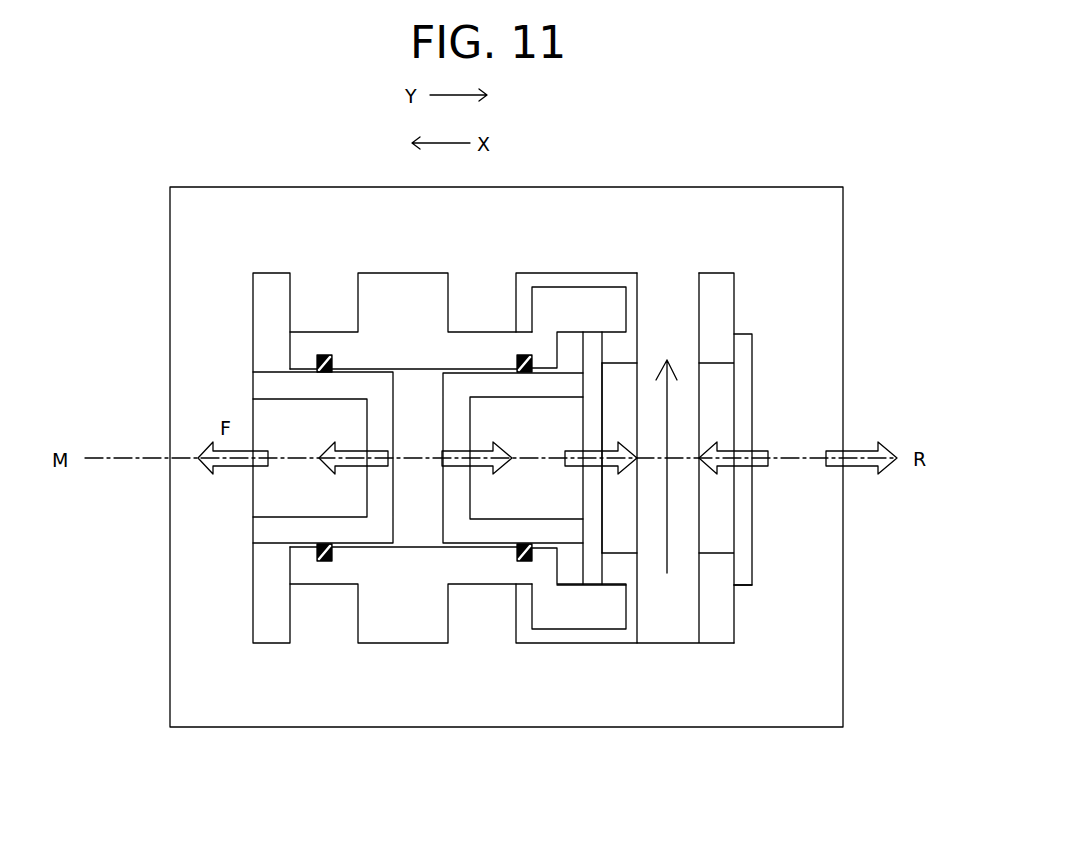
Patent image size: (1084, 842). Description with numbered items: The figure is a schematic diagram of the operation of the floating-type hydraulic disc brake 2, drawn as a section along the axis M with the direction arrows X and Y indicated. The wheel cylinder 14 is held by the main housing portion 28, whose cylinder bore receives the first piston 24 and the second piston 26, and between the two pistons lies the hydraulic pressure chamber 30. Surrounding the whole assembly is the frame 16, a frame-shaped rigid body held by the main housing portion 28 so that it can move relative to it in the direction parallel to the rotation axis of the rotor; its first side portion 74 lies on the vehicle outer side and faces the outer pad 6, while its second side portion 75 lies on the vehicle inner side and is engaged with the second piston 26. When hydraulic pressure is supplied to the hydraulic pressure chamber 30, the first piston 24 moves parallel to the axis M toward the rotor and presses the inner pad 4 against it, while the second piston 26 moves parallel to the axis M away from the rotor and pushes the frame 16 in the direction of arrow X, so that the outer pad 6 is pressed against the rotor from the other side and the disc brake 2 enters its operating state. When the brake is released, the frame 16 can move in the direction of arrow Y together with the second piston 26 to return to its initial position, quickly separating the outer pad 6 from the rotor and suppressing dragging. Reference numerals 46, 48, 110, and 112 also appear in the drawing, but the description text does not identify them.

The disc brake 2 is at (670, 607).
The inner pad 4 is at (620, 575).
The outer pad 6 is at (716, 348).
The wheel cylinder 14 is at (268, 352).
The frame 16 is at (300, 705).
The first piston 24 is at (546, 384).
The second piston 26 is at (270, 387).
The main housing portion 28 is at (545, 607).
The hydraulic pressure chamber 30 is at (418, 522).
The plate 46 is at (593, 572).
The bolt 48 is at (594, 332).
The first side portion 74 is at (818, 490).
The second side portion 75 is at (200, 528).
The flange 110 is at (742, 587).
The wall member 112 is at (743, 334).